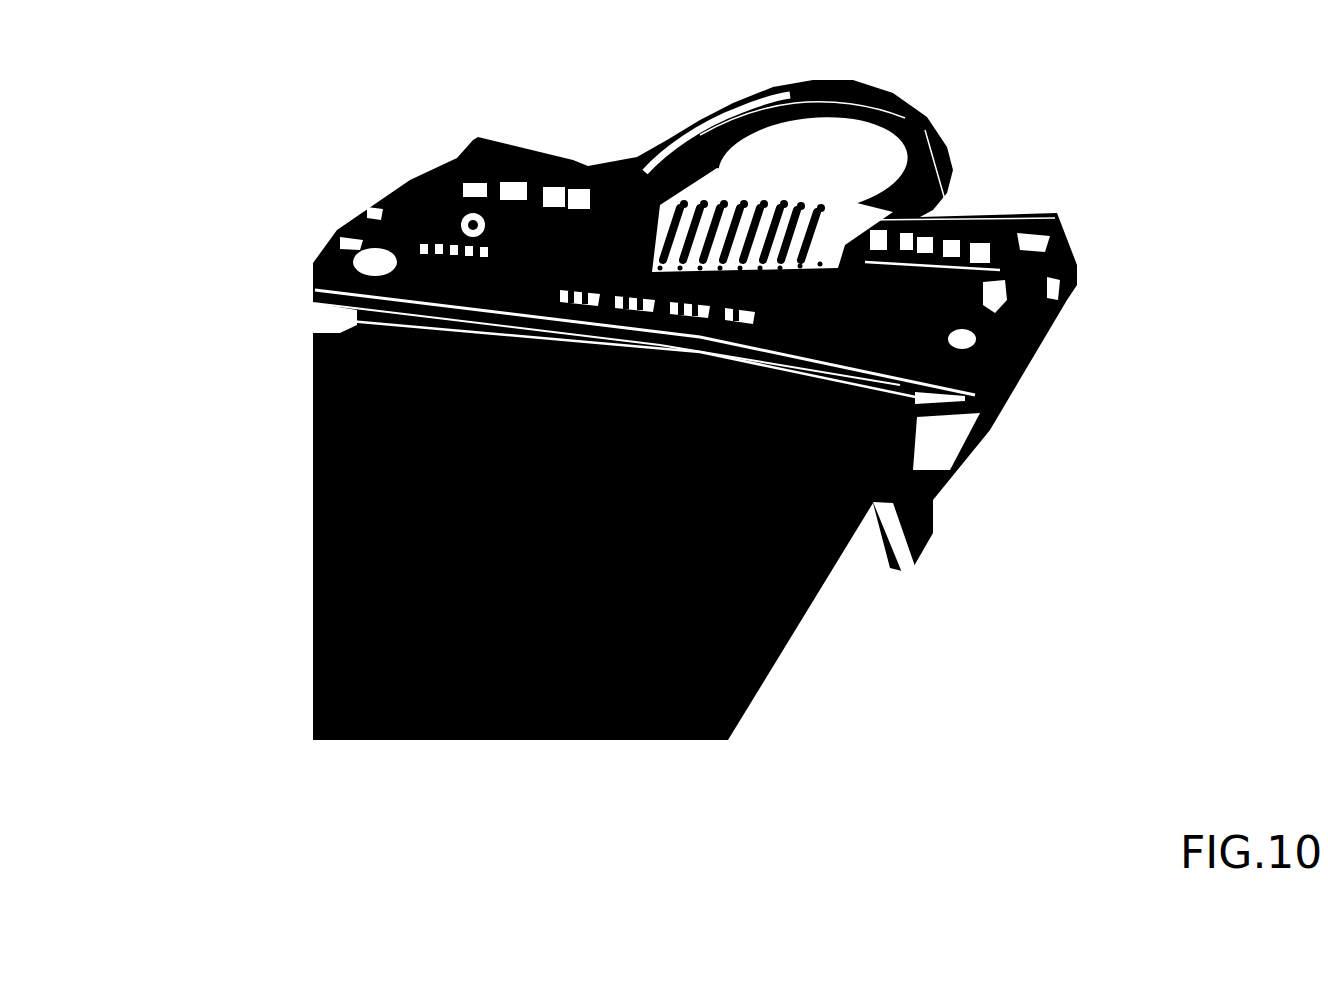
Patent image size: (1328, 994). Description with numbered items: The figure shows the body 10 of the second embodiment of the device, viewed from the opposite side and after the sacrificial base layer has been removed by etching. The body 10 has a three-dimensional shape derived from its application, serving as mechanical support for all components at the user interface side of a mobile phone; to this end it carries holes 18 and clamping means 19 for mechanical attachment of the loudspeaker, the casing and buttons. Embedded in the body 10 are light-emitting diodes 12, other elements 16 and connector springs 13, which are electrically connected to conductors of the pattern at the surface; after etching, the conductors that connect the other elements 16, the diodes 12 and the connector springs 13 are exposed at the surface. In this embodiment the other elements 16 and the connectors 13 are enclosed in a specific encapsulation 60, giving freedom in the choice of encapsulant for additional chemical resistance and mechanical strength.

The body 10 is at (160, 271).
The light-emitting diodes 12 is at (900, 312).
The connector springs 13 is at (717, 207).
The other elements 16 is at (917, 221).
The holes 18 is at (830, 153).
The clamping means 19 is at (913, 146).
The encapsulation 60 is at (838, 300).